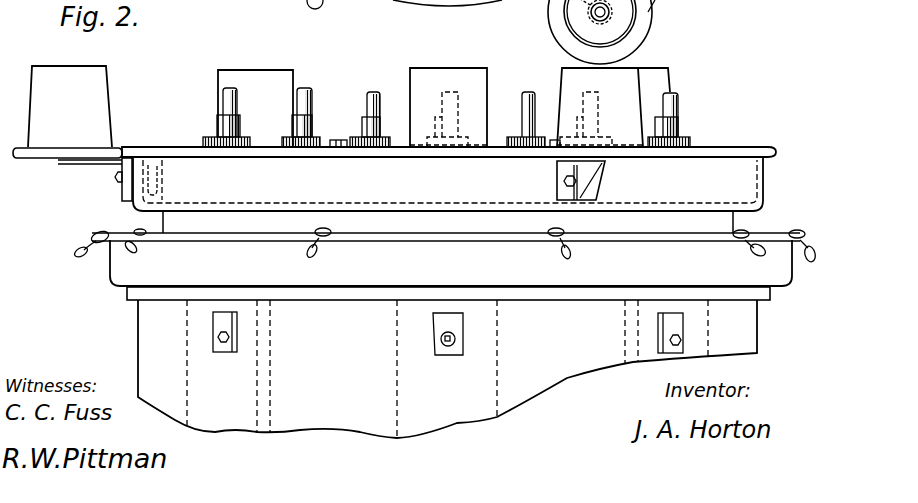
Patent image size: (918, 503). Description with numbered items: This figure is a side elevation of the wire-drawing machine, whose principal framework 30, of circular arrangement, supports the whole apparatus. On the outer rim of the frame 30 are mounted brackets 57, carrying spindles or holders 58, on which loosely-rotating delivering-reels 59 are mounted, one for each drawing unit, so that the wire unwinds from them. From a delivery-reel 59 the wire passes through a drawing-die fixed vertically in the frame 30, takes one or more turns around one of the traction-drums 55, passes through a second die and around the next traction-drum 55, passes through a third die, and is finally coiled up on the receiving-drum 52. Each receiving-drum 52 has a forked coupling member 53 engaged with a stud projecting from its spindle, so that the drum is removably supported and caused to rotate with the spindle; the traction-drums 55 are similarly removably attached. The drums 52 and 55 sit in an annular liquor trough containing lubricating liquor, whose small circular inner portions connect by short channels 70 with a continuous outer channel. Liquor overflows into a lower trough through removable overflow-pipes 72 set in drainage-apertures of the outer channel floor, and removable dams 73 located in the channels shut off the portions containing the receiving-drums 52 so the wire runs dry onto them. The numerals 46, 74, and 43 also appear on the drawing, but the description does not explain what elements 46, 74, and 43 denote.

The framework 30 is at (143, 340).
The tie straps 46 is at (135, 245).
The wire receiving or storing drum 52 is at (228, 80).
The traction-drum 55 is at (207, 133).
The bracket 57 is at (117, 162).
The delivering-reel 59 is at (100, 118).
The spindle or holder 58 is at (597, 13).
The forked coupling member 53 is at (665, 6).
The short channel 70 is at (458, 0).
The overflow-pipe 72 is at (410, 0).
The removable dam 73 is at (357, 0).
The dial part 74 is at (492, 0).
The knob 43 is at (298, 4).